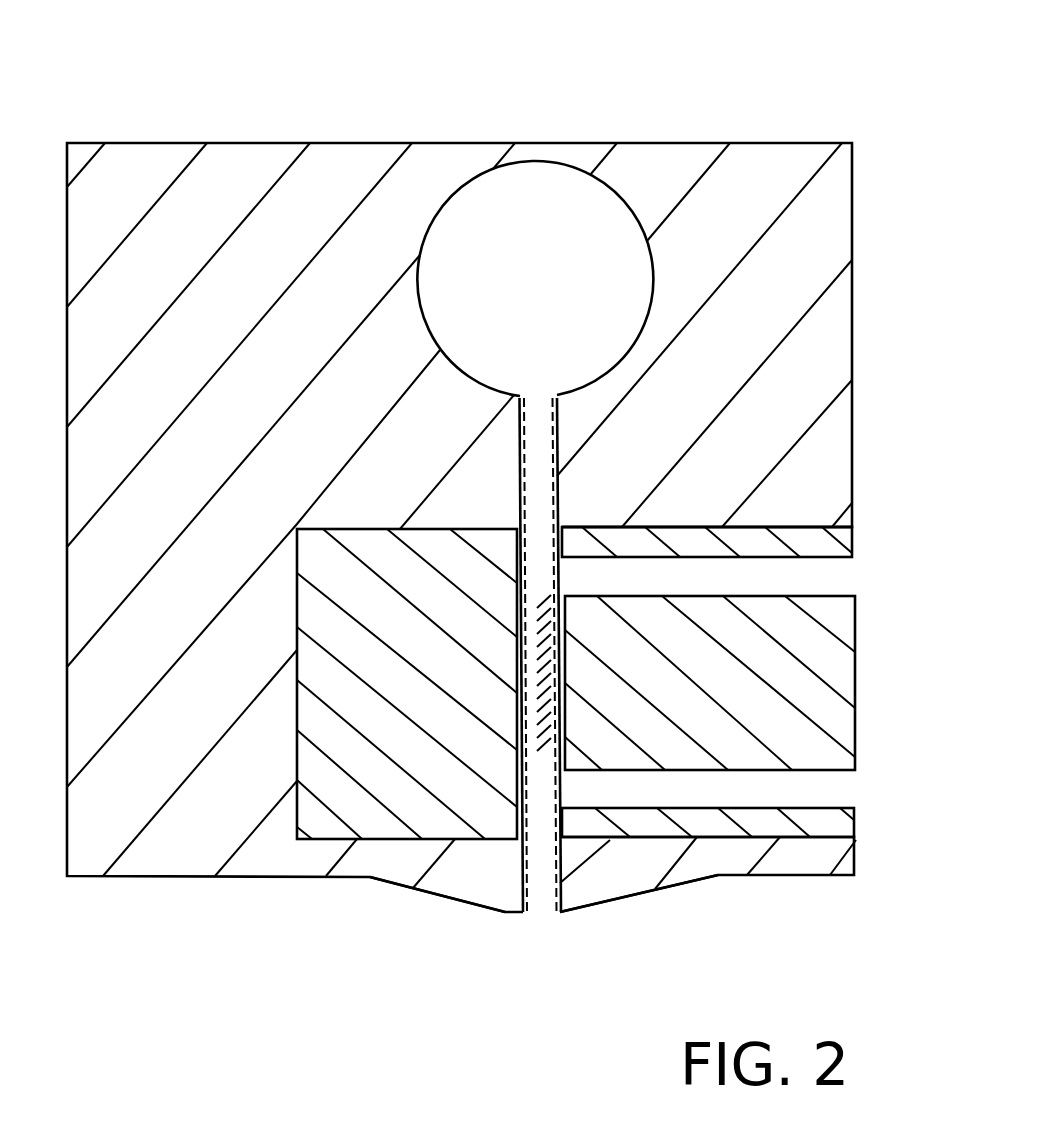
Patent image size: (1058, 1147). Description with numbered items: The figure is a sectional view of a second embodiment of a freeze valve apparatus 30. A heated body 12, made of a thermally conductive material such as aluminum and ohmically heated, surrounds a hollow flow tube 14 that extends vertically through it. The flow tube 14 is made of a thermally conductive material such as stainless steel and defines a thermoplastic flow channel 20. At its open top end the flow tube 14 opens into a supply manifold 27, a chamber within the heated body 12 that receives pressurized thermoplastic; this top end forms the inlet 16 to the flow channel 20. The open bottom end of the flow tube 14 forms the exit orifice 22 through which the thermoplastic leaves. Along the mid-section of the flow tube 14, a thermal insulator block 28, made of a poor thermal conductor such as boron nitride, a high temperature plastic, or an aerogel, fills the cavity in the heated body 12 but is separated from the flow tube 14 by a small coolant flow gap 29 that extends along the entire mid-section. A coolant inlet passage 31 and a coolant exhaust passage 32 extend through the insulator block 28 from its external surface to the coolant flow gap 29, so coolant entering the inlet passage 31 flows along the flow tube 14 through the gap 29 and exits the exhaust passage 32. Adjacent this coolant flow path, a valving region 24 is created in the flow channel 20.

The heated body 12 is at (217, 433).
The hollow flow tube 14 is at (558, 913).
The inlet 16 is at (537, 398).
The thermoplastic flow channel 20 is at (533, 497).
The exit orifice 22 is at (543, 912).
The valving region 24 is at (535, 718).
The supply manifold 27 is at (473, 195).
The thermal insulator block 28 is at (371, 722).
The coolant flow gap 29 is at (518, 848).
The freeze valve apparatus 30 is at (789, 66).
The coolant inlet passage 31 is at (815, 575).
The coolant exhaust passage 32 is at (827, 780).